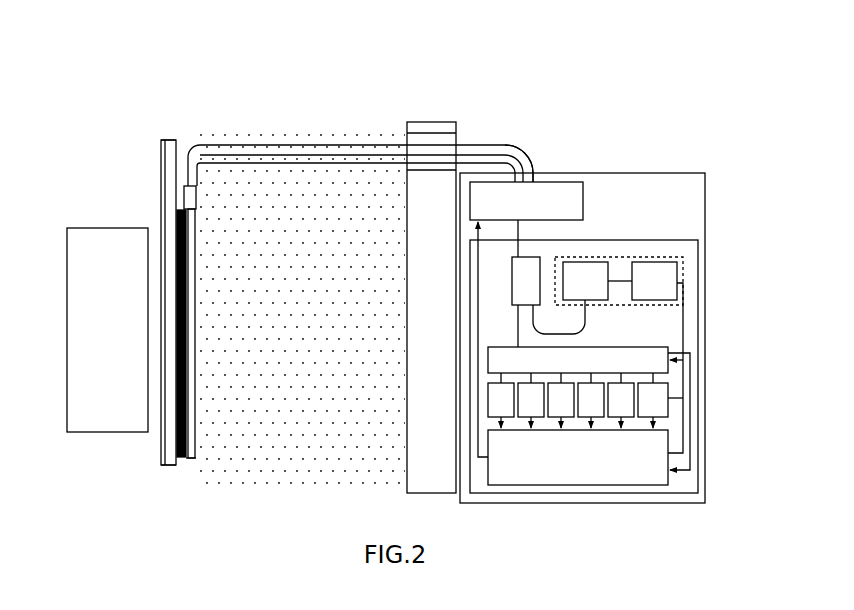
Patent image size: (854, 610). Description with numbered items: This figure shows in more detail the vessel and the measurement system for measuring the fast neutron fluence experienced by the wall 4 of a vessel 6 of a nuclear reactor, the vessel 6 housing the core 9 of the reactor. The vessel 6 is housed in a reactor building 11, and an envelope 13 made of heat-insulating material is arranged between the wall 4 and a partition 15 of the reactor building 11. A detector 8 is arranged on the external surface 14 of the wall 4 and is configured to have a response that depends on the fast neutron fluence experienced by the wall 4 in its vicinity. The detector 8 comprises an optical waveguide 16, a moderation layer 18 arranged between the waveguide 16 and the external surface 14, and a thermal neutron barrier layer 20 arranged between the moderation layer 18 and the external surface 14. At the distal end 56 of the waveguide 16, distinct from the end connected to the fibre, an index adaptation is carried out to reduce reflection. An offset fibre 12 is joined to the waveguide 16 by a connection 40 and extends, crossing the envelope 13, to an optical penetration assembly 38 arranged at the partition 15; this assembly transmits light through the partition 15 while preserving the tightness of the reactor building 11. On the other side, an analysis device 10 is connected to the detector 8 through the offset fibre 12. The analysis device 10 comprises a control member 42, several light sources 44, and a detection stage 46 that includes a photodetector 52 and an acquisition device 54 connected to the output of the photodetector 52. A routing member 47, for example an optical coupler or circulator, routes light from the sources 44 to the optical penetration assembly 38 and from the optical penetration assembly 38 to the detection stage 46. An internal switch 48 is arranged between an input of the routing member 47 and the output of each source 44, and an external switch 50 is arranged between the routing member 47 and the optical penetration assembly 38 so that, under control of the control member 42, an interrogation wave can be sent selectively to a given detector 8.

The wall 4 is at (168, 138).
The vessel 6 is at (144, 134).
The detector 8 is at (207, 252).
The core 9 is at (87, 226).
The analysis device 10 is at (707, 210).
The reactor building 11 is at (442, 87).
The offset fibre 12 is at (358, 144).
The envelope 13 is at (296, 174).
The external surface 14 is at (185, 141).
The partition 15 is at (447, 107).
The optical waveguide 16 is at (198, 294).
The moderation layer 18 is at (190, 466).
The thermal neutron barrier layer 20 is at (176, 470).
The optical penetration assembly 38 is at (456, 137).
The connection 40 is at (197, 196).
The control member 42 is at (578, 457).
The light source 44 is at (693, 400).
The detection stage 46 is at (693, 266).
The routing member 47 is at (542, 260).
The internal switch 48 is at (693, 353).
The external switch 50 is at (578, 181).
The photodetector 52 is at (597, 281).
The acquisition device 54 is at (657, 357).
The distal end 56 is at (195, 460).